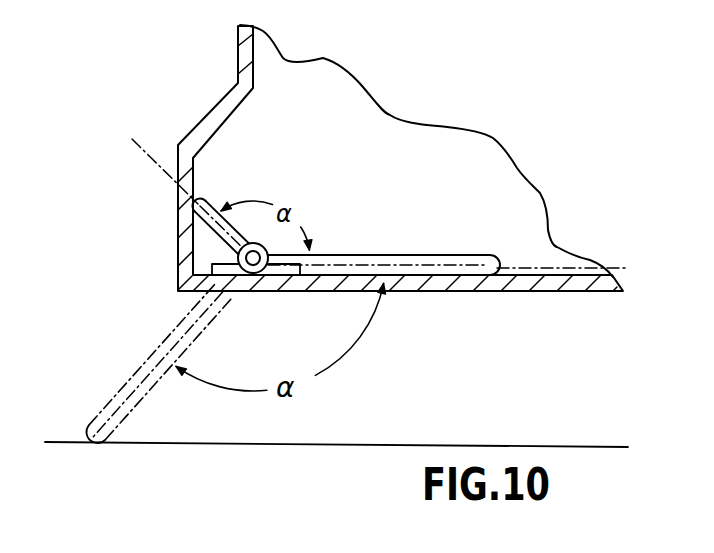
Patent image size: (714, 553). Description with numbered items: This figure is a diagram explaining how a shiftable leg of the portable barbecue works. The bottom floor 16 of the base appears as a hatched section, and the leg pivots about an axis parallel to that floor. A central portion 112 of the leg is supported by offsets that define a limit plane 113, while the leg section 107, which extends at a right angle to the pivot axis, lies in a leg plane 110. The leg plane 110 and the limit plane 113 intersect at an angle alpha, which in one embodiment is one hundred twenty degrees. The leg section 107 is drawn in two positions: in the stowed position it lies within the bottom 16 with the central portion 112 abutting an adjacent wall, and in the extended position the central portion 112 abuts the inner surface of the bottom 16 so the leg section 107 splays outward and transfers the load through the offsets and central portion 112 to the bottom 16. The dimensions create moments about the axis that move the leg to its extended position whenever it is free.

The bottom floor 16 is at (556, 294).
The leg section 107 is at (438, 254).
The leg plane 110 is at (522, 268).
The central portion 112 is at (214, 204).
The limit plane 113 is at (148, 157).